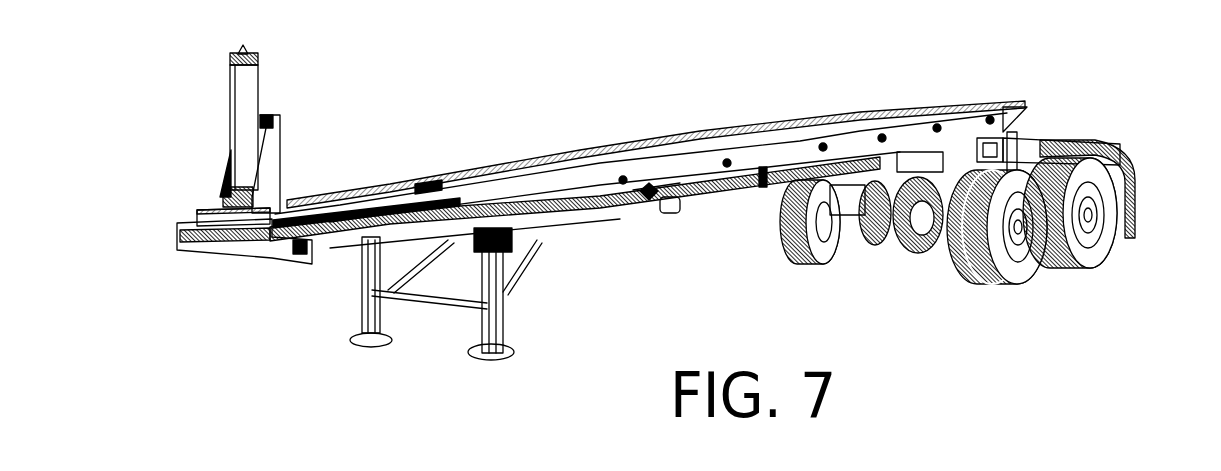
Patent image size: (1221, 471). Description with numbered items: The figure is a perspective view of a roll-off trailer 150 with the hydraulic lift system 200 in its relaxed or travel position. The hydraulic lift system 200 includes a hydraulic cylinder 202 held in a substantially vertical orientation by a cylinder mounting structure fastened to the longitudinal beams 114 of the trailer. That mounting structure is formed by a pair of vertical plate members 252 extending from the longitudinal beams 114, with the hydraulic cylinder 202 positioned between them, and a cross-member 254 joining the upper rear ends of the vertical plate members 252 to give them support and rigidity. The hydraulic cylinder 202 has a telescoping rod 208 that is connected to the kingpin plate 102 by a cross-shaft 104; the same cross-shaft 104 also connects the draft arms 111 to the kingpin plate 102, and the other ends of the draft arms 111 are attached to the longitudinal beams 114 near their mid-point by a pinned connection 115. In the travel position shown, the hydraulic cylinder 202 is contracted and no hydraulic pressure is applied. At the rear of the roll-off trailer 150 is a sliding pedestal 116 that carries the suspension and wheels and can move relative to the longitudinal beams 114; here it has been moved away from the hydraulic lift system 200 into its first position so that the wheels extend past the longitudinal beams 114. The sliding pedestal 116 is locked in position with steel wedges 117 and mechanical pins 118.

The hydraulic lift system 200 is at (215, 104).
The hydraulic cylinder 202 is at (250, 52).
The cross-member 254 is at (268, 117).
The vertical plate members 252 is at (275, 148).
The telescoping rod 208 is at (232, 212).
The kingpin plate 102 is at (232, 260).
The cross-shaft 104 is at (302, 248).
The longitudinal beams 114 is at (428, 178).
The roll-off trailer 150 is at (706, 113).
The mechanical pins 118 is at (883, 160).
The pinned connection 115 is at (650, 220).
The steel wedges 117 is at (762, 190).
The sliding pedestal 116 is at (895, 230).
The draft arms 111 is at (600, 224).